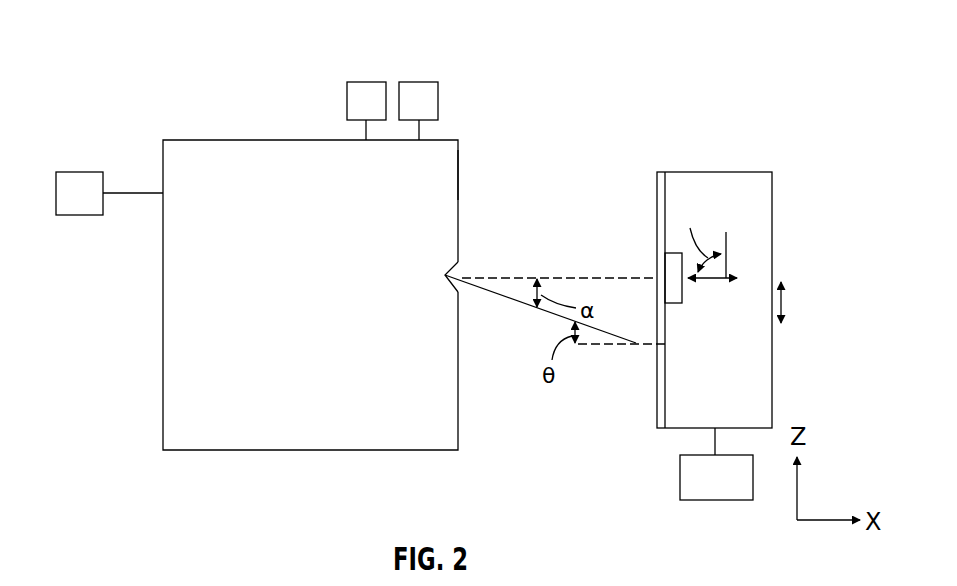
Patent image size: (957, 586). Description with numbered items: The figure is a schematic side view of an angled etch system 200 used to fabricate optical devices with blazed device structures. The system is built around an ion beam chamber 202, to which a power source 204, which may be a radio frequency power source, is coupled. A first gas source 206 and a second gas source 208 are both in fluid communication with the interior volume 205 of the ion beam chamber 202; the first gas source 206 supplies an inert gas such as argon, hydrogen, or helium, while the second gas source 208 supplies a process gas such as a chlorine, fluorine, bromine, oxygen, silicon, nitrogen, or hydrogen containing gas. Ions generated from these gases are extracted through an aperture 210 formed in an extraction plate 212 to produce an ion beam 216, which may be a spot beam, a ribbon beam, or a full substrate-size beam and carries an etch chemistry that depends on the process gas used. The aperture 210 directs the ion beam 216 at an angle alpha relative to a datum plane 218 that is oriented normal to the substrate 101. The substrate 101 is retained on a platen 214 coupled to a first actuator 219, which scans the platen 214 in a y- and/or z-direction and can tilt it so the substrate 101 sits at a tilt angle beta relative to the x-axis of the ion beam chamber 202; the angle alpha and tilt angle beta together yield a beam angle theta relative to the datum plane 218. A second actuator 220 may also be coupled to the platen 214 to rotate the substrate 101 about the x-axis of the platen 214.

The angled etch system 200 is at (185, 90).
The ion beam chamber 202 is at (228, 138).
The power source 204 is at (80, 215).
The interior volume 205 is at (332, 307).
The first gas source 206 is at (365, 82).
The second gas source 208 is at (420, 82).
The aperture 210 is at (448, 270).
The extraction plate 212 is at (460, 168).
The platen 214 is at (715, 172).
The substrate 101 is at (660, 172).
The ion beam 216 is at (525, 305).
The datum plane 218 is at (595, 276).
The first actuator 219 is at (718, 500).
The second actuator 220 is at (684, 296).